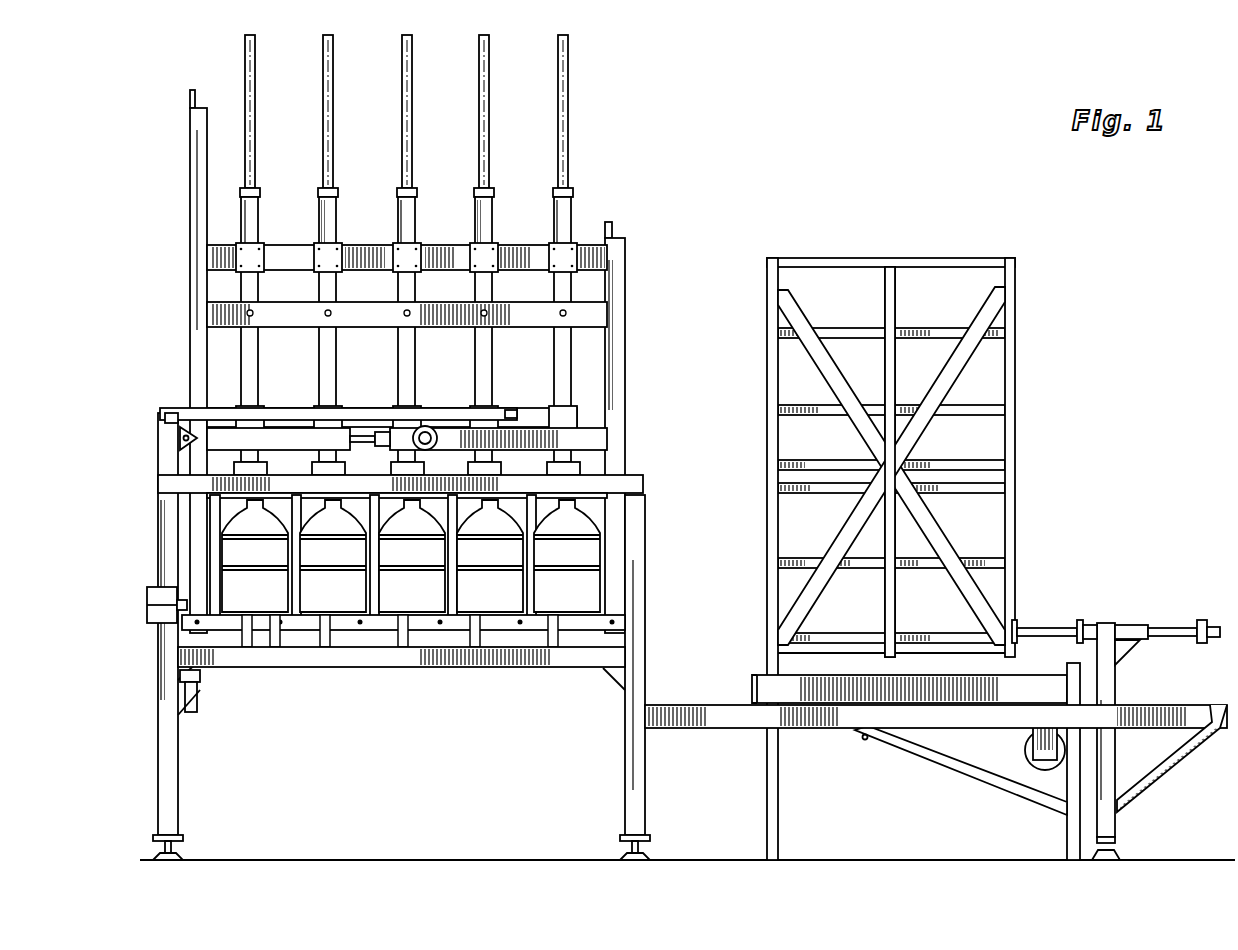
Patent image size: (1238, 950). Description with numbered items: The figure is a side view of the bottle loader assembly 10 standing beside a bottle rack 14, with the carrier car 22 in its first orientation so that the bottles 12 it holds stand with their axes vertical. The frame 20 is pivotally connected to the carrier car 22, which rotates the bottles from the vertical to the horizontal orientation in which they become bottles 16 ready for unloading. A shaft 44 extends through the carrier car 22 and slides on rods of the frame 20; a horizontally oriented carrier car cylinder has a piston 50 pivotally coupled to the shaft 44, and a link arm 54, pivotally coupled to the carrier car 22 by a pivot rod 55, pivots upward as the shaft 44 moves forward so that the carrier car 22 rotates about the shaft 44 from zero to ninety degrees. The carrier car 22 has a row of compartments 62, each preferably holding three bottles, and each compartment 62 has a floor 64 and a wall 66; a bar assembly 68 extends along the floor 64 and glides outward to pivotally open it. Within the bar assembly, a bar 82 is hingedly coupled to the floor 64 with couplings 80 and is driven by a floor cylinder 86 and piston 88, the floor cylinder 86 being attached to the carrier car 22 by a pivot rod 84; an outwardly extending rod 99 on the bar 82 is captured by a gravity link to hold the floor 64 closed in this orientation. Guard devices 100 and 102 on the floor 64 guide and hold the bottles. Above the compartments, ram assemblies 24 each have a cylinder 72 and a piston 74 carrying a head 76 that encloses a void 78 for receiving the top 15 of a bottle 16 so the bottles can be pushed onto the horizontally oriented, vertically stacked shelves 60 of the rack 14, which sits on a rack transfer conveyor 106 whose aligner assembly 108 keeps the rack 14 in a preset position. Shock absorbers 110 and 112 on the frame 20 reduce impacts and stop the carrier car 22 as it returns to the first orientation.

The bottle loader assembly 10 is at (712, 182).
The bottles 12 is at (598, 512).
The bottle rack 14 is at (1020, 292).
The top 15 is at (598, 505).
The bottles 16 is at (300, 640).
The frame 20 is at (156, 431).
The carrier car 22 is at (618, 632).
The ram assembly 24 is at (432, 182).
The shaft 44 is at (410, 428).
The piston 50 is at (352, 428).
The link arm 54 is at (425, 426).
The pivot rod 55 is at (170, 413).
The shelves 60 is at (832, 335).
The compartments 62 is at (234, 505).
The floor 64 is at (598, 618).
The wall 66 is at (190, 540).
The bar assembly 68 is at (375, 640).
The cylinder 72 is at (416, 213).
The piston 74 is at (402, 143).
The head 76 is at (578, 425).
The void 78 is at (318, 645).
The couplings 80 is at (250, 647).
The bar 82 is at (585, 647).
The pivot rod 84 is at (505, 640).
The floor cylinder 86 is at (460, 640).
The piston 88 is at (428, 640).
The rod 99 is at (275, 647).
The guard device 100 is at (600, 605).
The guard device 102 is at (600, 610).
The conveyor 106 is at (936, 758).
The aligner assembly 108 is at (1100, 600).
The shock absorber 110 is at (147, 594).
The shock absorber 112 is at (198, 712).